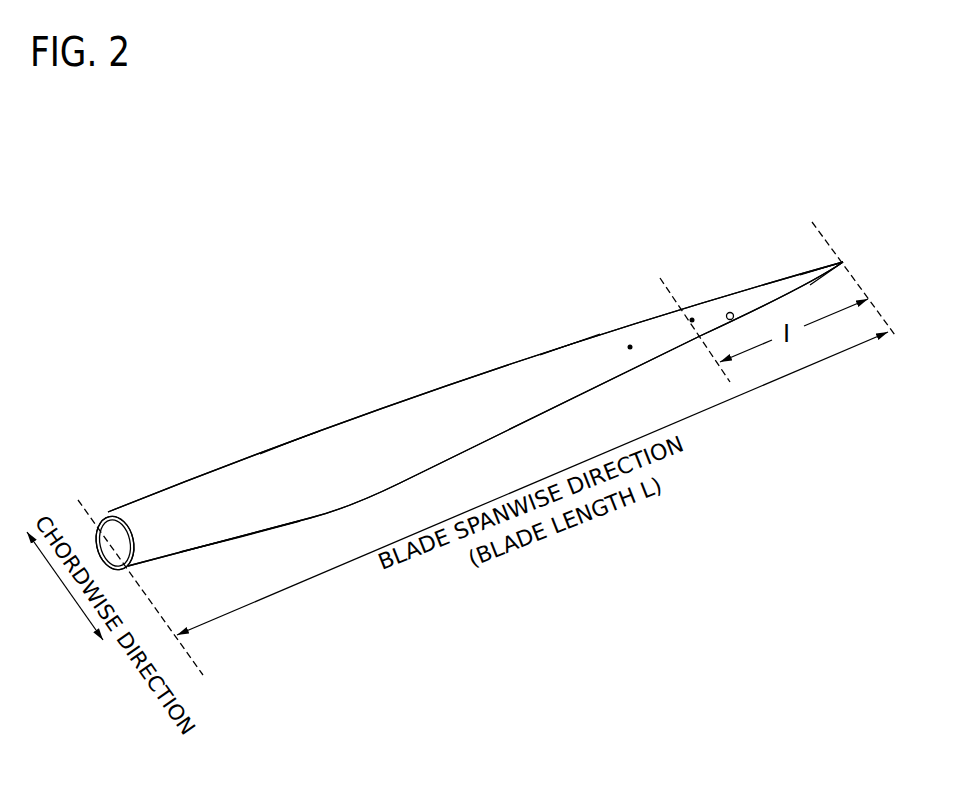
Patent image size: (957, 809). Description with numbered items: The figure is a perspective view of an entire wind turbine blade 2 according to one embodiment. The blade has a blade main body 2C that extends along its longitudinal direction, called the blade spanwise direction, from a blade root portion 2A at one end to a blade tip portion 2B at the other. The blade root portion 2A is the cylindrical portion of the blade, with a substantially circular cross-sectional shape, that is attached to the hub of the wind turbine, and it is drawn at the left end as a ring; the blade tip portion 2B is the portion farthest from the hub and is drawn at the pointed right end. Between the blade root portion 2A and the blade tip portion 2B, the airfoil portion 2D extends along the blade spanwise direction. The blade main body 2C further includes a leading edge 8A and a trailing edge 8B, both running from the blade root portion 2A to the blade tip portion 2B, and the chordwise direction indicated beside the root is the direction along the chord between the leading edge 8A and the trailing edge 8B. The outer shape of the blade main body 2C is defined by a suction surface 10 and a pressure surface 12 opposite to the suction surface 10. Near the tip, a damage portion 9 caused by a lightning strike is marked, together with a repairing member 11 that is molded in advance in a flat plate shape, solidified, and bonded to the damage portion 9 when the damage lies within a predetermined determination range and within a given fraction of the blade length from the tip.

The wind turbine blade 2 is at (242, 222).
The blade root portion 2A is at (103, 520).
The blade tip portion 2B is at (838, 259).
The blade main body 2C is at (578, 357).
The airfoil portion 2D is at (312, 456).
The leading edge 8A is at (490, 372).
The trailing edge 8B is at (532, 418).
The damage portion 9 is at (692, 320).
The suction surface 10 is at (256, 512).
The repairing member 11 is at (731, 312).
The pressure surface 12 is at (228, 538).